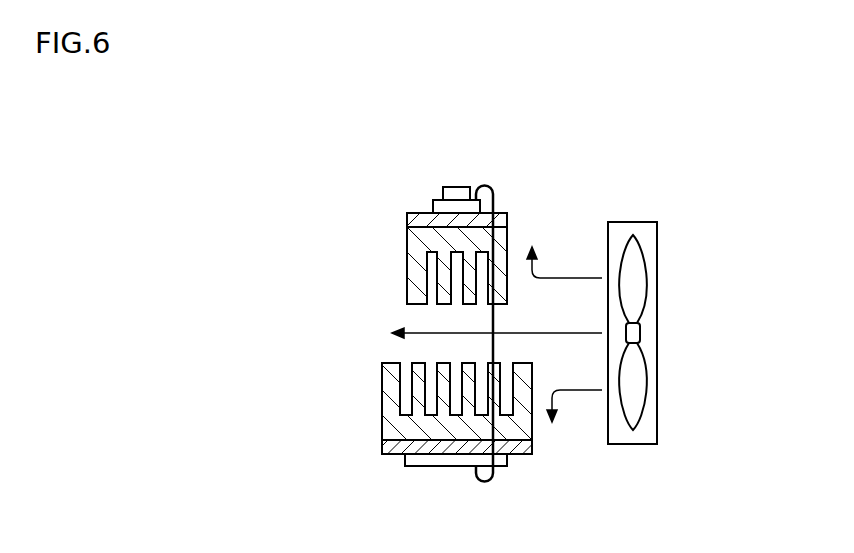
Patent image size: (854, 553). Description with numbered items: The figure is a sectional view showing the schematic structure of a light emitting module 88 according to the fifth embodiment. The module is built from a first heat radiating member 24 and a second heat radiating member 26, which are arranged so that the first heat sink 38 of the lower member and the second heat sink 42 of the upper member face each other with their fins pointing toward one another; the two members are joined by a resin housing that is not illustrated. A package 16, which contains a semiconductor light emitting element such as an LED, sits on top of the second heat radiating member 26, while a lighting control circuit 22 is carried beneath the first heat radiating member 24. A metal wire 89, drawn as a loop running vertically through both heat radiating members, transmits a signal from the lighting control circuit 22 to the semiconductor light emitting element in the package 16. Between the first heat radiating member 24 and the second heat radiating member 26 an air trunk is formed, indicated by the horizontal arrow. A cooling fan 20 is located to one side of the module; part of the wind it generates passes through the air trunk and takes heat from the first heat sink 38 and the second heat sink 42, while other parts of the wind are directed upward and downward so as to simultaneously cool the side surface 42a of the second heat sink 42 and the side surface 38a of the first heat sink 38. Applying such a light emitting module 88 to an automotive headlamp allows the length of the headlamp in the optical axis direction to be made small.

The package 16 is at (455, 181).
The cooling fan 20 is at (657, 274).
The lighting control circuit 22 is at (443, 467).
The first heat radiating member 24 is at (373, 425).
The second heat radiating member 26 is at (399, 248).
The first heat sink 38 is at (382, 382).
The side surface of the first heat sink 38a is at (532, 418).
The second heat sink 42 is at (406, 290).
The side surface of the second heat sink 42a is at (507, 248).
The light emitting module 88 is at (377, 178).
The metal wire 89 is at (497, 183).